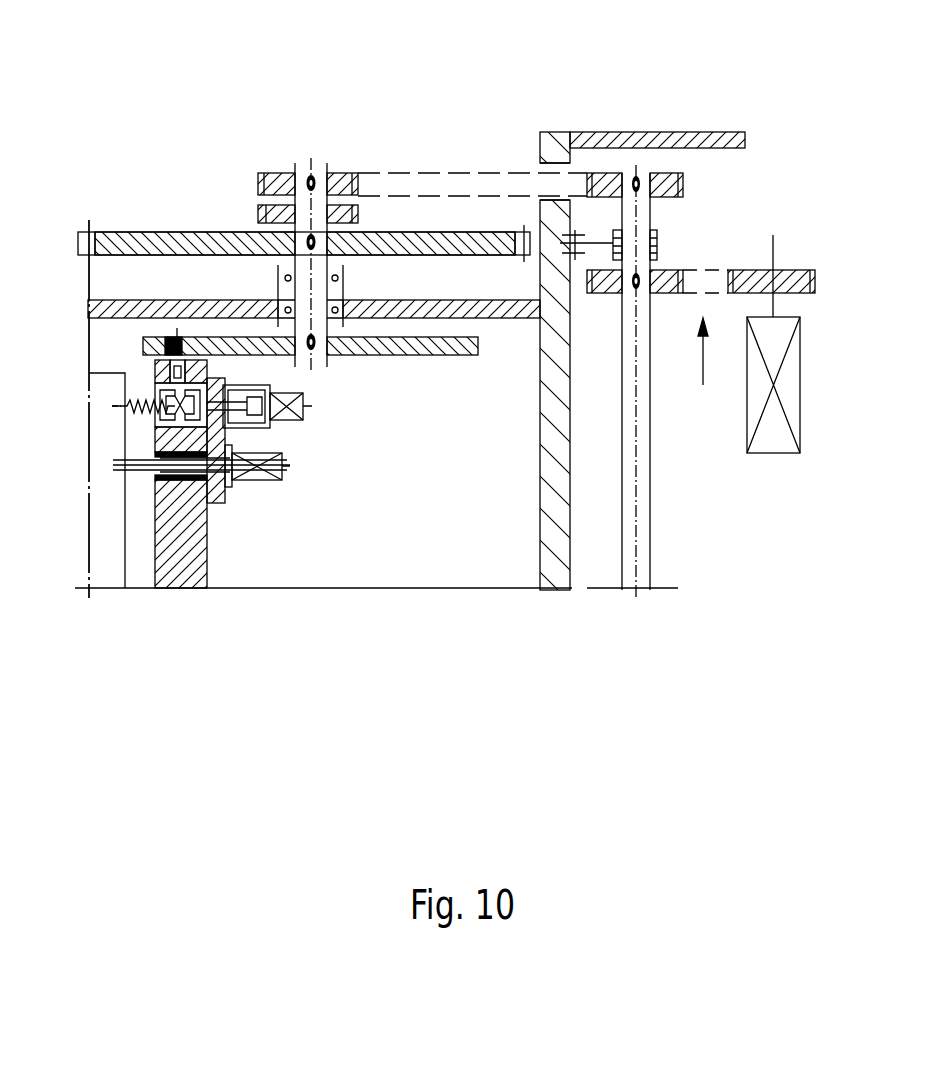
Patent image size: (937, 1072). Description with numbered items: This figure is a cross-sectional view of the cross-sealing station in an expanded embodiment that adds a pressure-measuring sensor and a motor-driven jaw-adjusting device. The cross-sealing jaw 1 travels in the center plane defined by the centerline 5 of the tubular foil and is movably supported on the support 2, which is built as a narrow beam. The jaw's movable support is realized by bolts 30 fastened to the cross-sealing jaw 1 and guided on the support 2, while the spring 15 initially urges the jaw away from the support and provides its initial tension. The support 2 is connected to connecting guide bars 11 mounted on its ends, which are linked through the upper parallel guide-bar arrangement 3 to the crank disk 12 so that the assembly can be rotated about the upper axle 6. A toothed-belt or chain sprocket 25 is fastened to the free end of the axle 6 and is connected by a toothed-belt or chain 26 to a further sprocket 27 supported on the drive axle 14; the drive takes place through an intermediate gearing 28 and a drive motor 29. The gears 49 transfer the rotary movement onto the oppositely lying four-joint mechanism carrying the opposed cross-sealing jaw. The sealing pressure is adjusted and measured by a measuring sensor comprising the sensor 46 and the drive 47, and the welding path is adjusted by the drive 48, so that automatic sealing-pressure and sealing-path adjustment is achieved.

The cross-sealing jaw 1 is at (107, 577).
The support 2 is at (175, 573).
The upper parallel guide-bar arrangement 3 is at (150, 337).
The centerline 5 is at (88, 283).
The upper axle 6 is at (320, 167).
The connecting guide bars 11 is at (153, 366).
The crank disk 12 is at (260, 211).
The drive axle 14 is at (640, 213).
The spring 15 is at (133, 400).
The toothed-belt or chain sprocket 25 is at (285, 172).
The toothed-belt or chain 26 is at (444, 173).
The further toothed-belt or chain sprocket 27 is at (667, 173).
The gearing 28 is at (704, 370).
The drive motor 29 is at (787, 398).
The bolts 30 is at (133, 470).
The sensor 46 is at (153, 438).
The drive 47 is at (287, 420).
The drive 48 is at (270, 480).
The gears 49 is at (153, 233).